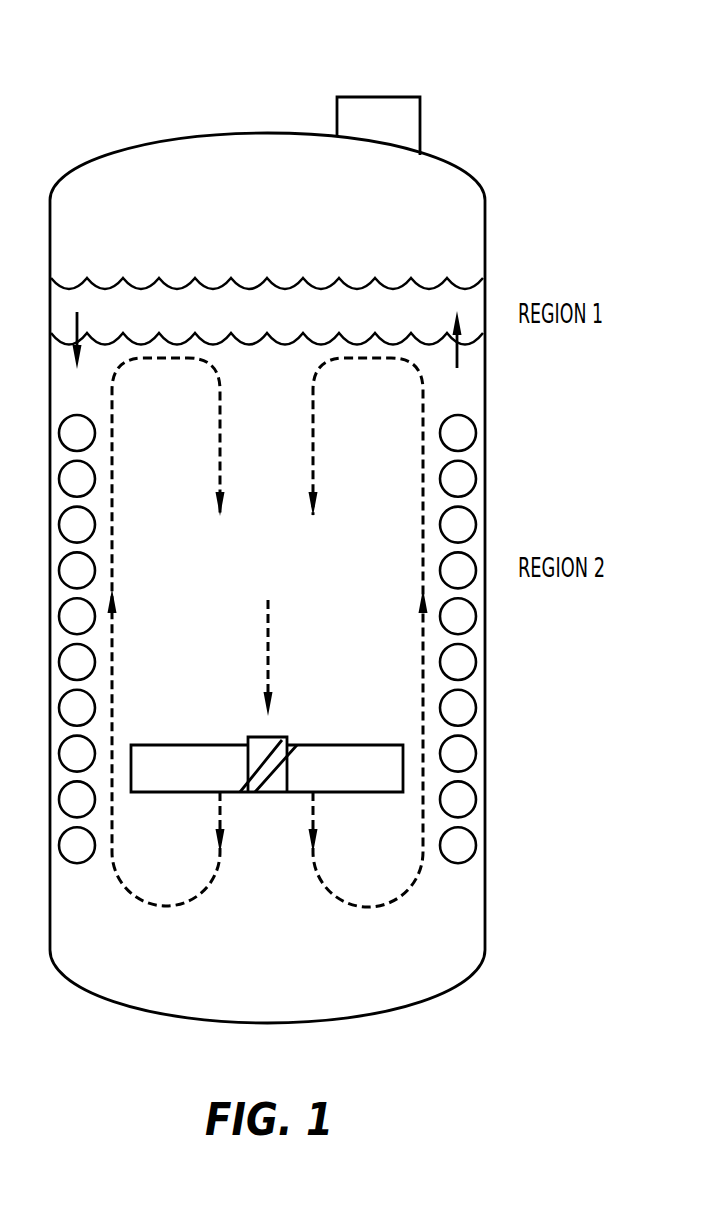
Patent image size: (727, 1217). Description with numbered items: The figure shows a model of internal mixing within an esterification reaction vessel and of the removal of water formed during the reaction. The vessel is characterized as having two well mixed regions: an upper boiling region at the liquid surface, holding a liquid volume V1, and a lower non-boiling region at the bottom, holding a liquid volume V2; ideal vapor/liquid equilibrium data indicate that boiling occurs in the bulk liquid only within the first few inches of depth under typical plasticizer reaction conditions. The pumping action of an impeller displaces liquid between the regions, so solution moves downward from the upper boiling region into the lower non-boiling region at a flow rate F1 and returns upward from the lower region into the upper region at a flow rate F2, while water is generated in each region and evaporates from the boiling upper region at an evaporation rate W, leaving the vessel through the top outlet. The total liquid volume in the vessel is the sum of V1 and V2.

The evaporation rate of water from Region 1 W is at (378, 97).
The flow rate of solution from Region 1 into Region 2 F1 is at (92, 333).
The flow rate of solution from Region 2 into Region 1 F2 is at (442, 332).
The volume of liquid in boiling Region 1 V1 is at (267, 311).
The volume of liquid in non-boiling Region 2 V2 is at (267, 631).